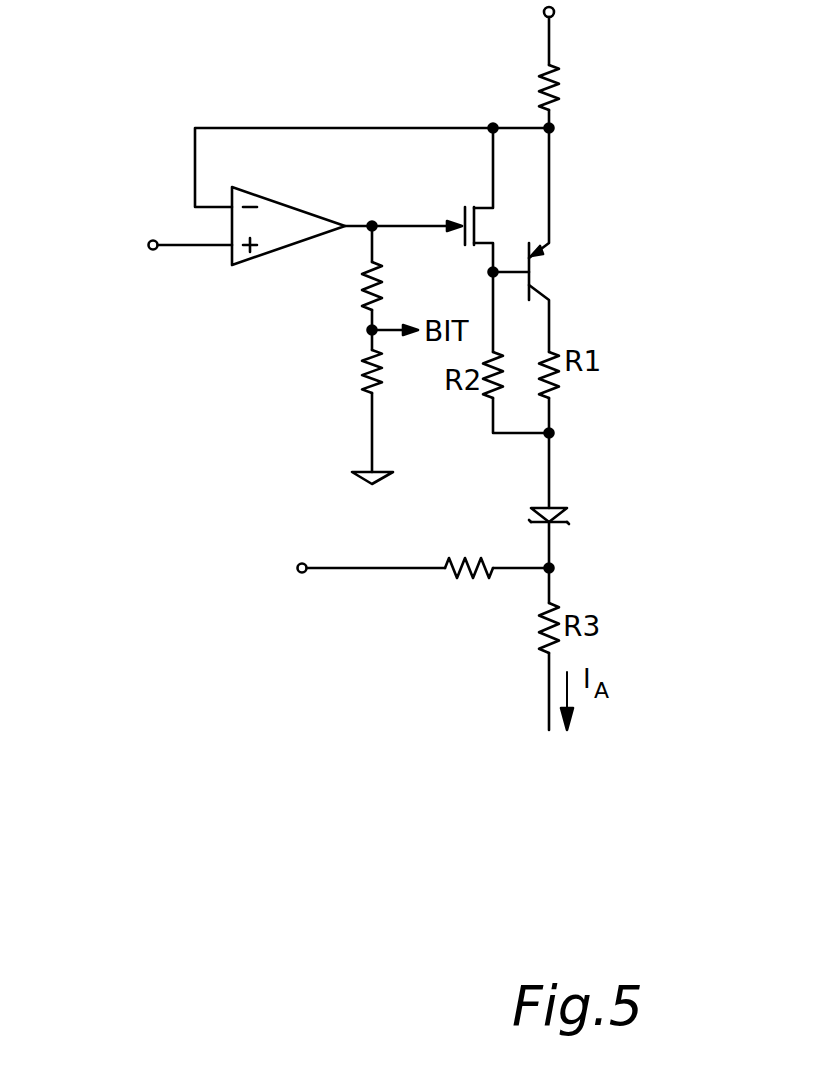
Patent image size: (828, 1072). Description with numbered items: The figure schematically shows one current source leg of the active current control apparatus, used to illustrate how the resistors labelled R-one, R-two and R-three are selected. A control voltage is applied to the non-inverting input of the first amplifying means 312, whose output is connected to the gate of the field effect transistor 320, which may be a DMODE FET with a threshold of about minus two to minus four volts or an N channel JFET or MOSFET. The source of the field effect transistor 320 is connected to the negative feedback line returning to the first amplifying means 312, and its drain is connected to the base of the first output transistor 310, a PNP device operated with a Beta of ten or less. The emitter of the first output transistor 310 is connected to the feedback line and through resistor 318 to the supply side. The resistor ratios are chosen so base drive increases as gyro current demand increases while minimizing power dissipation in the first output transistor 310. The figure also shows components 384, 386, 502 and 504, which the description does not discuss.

The first output transistor 310 is at (540, 271).
The first amplifying means 312 is at (286, 210).
The resistor 318 is at (541, 77).
The field effect transistor 320 is at (492, 207).
The resistor 384 is at (365, 393).
The resistor 386 is at (365, 307).
The zener diode 502 is at (572, 515).
The 100 megohm resistor 504 is at (488, 574).